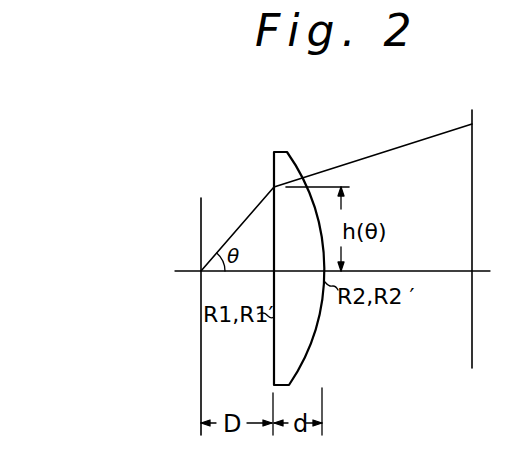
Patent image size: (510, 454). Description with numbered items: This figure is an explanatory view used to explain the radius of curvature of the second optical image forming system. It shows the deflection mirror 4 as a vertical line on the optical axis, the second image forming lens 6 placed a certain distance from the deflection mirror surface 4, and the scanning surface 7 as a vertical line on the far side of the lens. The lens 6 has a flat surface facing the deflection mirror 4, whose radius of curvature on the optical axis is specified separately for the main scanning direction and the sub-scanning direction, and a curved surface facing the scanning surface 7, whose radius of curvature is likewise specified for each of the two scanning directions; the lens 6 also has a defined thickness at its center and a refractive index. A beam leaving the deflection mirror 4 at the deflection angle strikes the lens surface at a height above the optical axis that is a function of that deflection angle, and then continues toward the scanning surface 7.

The deflection mirror 4 is at (201, 222).
The second image forming lens 6 is at (291, 166).
The scanning surface 7 is at (473, 151).